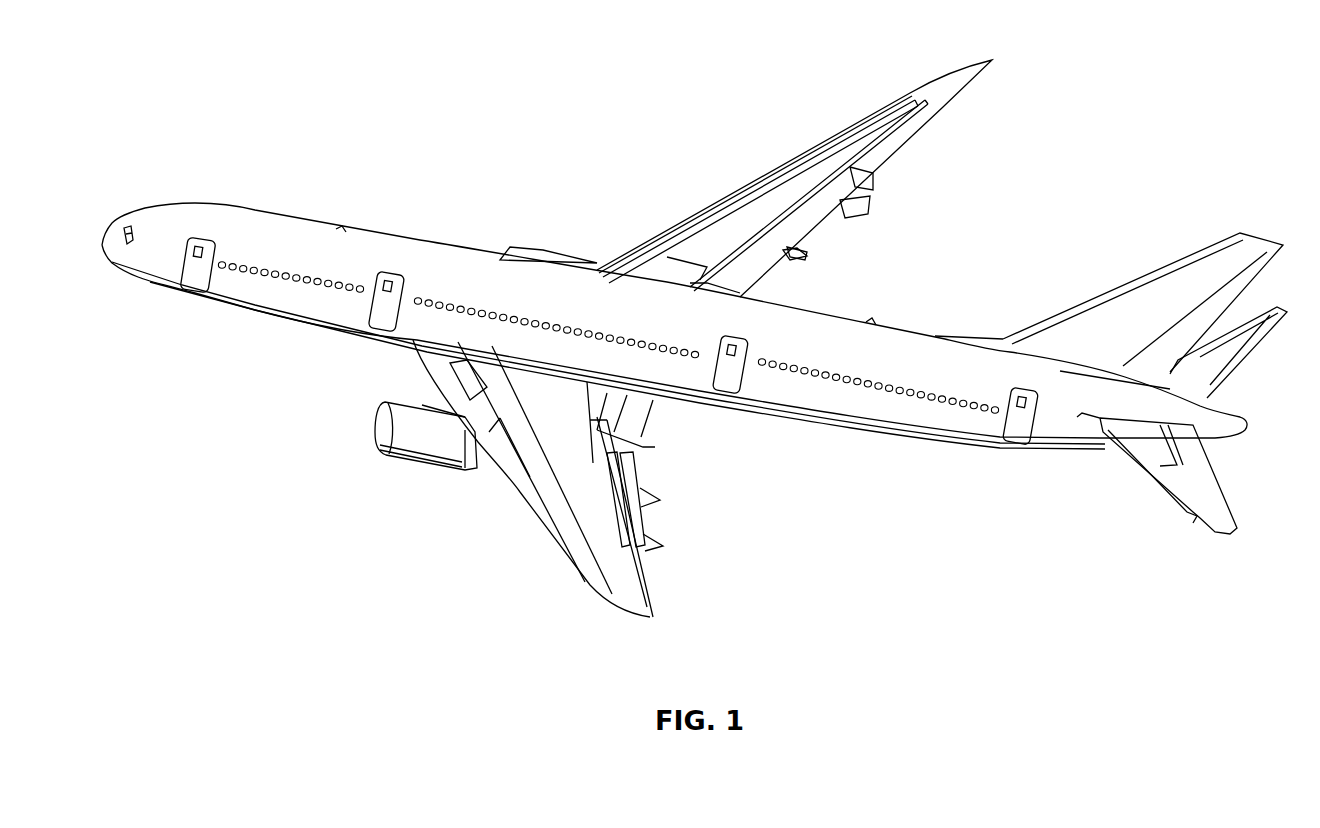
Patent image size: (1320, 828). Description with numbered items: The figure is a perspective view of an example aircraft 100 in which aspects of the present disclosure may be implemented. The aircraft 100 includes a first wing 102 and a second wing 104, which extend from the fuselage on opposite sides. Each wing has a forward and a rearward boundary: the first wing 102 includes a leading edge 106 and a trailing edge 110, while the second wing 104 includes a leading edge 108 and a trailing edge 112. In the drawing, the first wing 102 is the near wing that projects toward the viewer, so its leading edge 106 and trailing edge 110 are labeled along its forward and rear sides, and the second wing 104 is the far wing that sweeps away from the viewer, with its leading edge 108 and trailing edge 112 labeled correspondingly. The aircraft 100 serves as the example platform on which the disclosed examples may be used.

The aircraft 100 is at (415, 152).
The first wing 102 is at (588, 517).
The second wing 104 is at (748, 222).
The leading edge 106 is at (517, 485).
The leading edge 108 is at (657, 232).
The trailing edge 110 is at (643, 517).
The trailing edge 112 is at (823, 220).